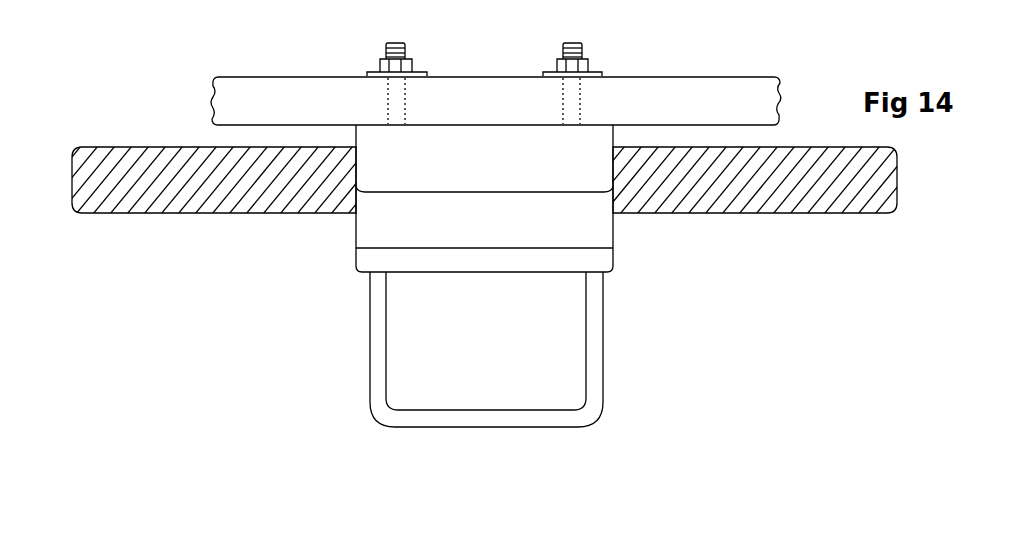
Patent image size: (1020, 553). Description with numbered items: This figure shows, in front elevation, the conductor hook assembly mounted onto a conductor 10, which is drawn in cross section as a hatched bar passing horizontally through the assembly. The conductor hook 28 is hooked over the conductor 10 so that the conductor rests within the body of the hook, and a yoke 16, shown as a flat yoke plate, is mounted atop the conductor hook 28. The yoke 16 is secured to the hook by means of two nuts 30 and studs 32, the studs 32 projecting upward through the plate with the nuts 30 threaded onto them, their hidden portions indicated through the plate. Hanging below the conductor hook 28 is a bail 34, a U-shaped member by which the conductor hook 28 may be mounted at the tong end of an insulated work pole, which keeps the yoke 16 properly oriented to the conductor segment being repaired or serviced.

The conductor 10 is at (733, 214).
The yoke 16 is at (496, 101).
The conductor hook 28 is at (355, 243).
The nut 30 is at (589, 63).
The stud 32 is at (578, 46).
The bail 34 is at (603, 371).